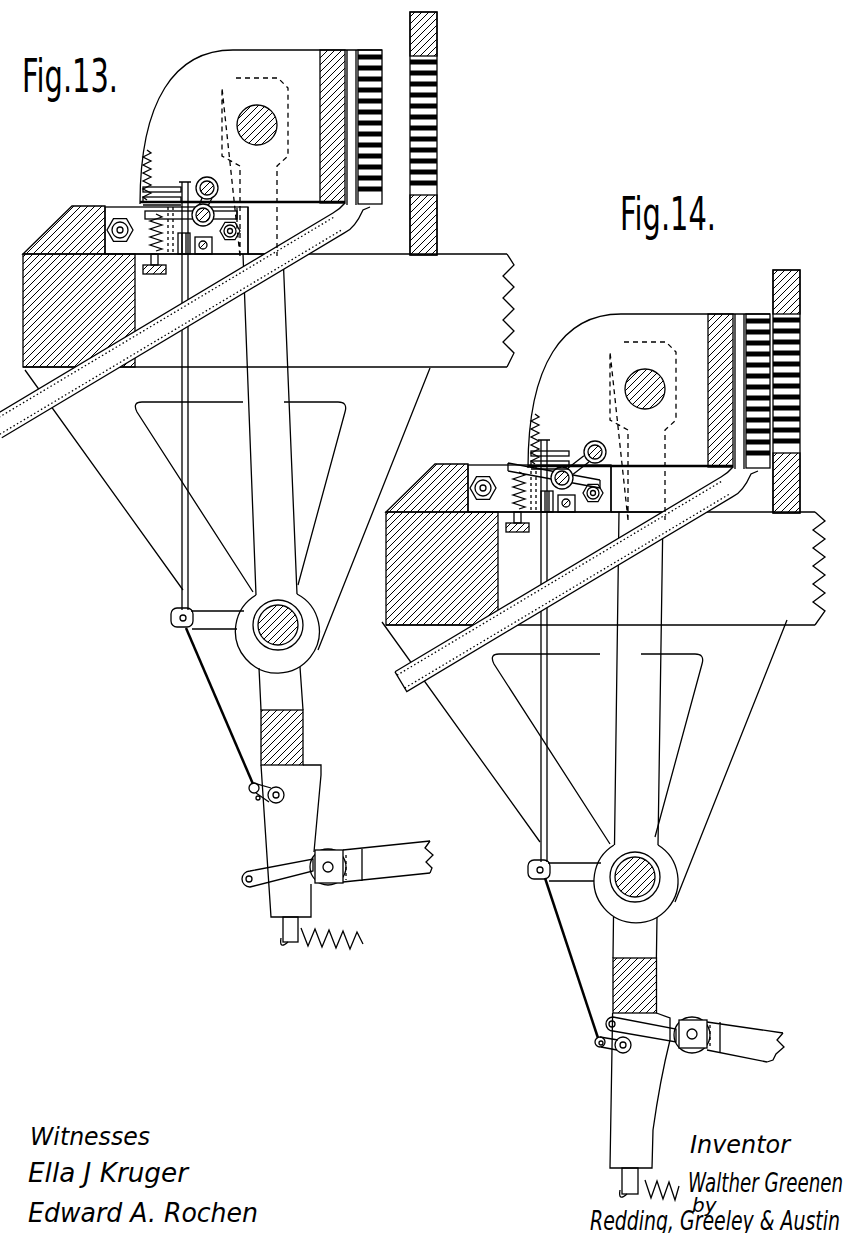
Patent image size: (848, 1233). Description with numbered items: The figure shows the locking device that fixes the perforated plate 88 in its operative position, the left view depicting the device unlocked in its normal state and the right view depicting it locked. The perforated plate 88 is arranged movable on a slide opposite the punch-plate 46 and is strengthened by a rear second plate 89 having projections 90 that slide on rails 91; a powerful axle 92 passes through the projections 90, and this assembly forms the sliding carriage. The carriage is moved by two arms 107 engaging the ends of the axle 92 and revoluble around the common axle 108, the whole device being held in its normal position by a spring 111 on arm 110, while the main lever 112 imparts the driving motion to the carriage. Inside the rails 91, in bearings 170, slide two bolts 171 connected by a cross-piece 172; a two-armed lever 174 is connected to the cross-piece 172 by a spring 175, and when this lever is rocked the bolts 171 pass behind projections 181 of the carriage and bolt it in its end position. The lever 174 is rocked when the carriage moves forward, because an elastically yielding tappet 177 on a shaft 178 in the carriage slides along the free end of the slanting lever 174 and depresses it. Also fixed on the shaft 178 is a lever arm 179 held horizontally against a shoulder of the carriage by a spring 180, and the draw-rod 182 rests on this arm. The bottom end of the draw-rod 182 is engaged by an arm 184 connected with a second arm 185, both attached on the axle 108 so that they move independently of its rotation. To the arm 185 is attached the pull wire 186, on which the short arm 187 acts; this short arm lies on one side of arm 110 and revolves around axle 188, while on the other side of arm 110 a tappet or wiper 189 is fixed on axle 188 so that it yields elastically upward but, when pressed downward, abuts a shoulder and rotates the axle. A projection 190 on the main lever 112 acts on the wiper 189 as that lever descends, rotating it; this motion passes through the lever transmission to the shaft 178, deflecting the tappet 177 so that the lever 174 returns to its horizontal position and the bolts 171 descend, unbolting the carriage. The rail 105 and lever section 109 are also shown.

In FIG. 13, the punch-plate 46 is at (432, 236).
In FIG. 14, the punch-plate 46 is at (799, 391).
In FIG. 13, the perforated plate 88 is at (372, 52).
In FIG. 14, the perforated plate 88 is at (758, 377).
In FIG. 13, the rear second plate 89 is at (341, 53).
In FIG. 14, the rear second plate 89 is at (720, 376).
In FIG. 13, the projections 90 is at (214, 64).
In FIG. 14, the projections 90 is at (649, 381).
In FIG. 13, the rails 91 is at (265, 230).
In FIG. 14, the rails 91 is at (657, 506).
In FIG. 13, the axle 92 is at (265, 127).
In FIG. 14, the axle 92 is at (646, 405).
In FIG. 13, the guide rail 105 is at (26, 418).
In FIG. 14, the guide rail 105 is at (576, 590).
In FIG. 13, the arms 107 is at (286, 454).
In FIG. 14, the arms 107 is at (584, 761).
In FIG. 13, the common axle 108 is at (291, 607).
In FIG. 14, the common axle 108 is at (652, 858).
In FIG. 13, the lever section 109 is at (303, 738).
In FIG. 14, the lever section 109 is at (660, 985).
In FIG. 13, the arm 110 is at (314, 830).
In FIG. 14, the arm 110 is at (660, 1082).
In FIG. 13, the spring 111 is at (348, 933).
In FIG. 14, the spring 111 is at (660, 1188).
In FIG. 13, the main lever 112 is at (396, 850).
In FIG. 14, the main lever 112 is at (749, 1040).
In FIG. 13, the bearings 170 is at (133, 207).
In FIG. 14, the bearings 170 is at (538, 471).
In FIG. 13, the bolts 171 is at (146, 186).
In FIG. 14, the bolts 171 is at (536, 428).
In FIG. 13, the cross-piece 172 is at (153, 278).
In FIG. 14, the cross-piece 172 is at (518, 532).
In FIG. 13, the two-armed lever 174 is at (148, 226).
In FIG. 14, the two-armed lever 174 is at (509, 465).
In FIG. 13, the spring 175 is at (110, 205).
In FIG. 14, the spring 175 is at (467, 470).
In FIG. 13, the tappet 177 is at (220, 211).
In FIG. 14, the tappet 177 is at (604, 470).
In FIG. 13, the shaft 178 is at (207, 178).
In FIG. 14, the shaft 178 is at (593, 439).
In FIG. 13, the lever arm 179 is at (181, 180).
In FIG. 14, the lever arm 179 is at (578, 424).
In FIG. 13, the spring 180 is at (142, 156).
In FIG. 14, the spring 180 is at (547, 424).
In FIG. 13, the projections 181 is at (164, 189).
In FIG. 14, the projections 181 is at (550, 441).
In FIG. 13, the draw-rod 182 is at (187, 330).
In FIG. 14, the draw-rod 182 is at (560, 651).
In FIG. 13, the arm 184 is at (176, 628).
In FIG. 14, the arm 184 is at (532, 882).
In FIG. 13, the second arm 185 is at (203, 620).
In FIG. 14, the second arm 185 is at (574, 859).
In FIG. 13, the pull wire 186 is at (217, 692).
In FIG. 14, the pull wire 186 is at (566, 935).
In FIG. 13, the short arm 187 is at (250, 791).
In FIG. 14, the short arm 187 is at (596, 1045).
In FIG. 13, the axle 188 is at (284, 795).
In FIG. 14, the axle 188 is at (625, 1053).
In FIG. 13, the tappet or wiper 189 is at (259, 801).
In FIG. 14, the tappet or wiper 189 is at (598, 1050).
In FIG. 13, the projection 190 is at (244, 880).
In FIG. 14, the projection 190 is at (606, 1023).